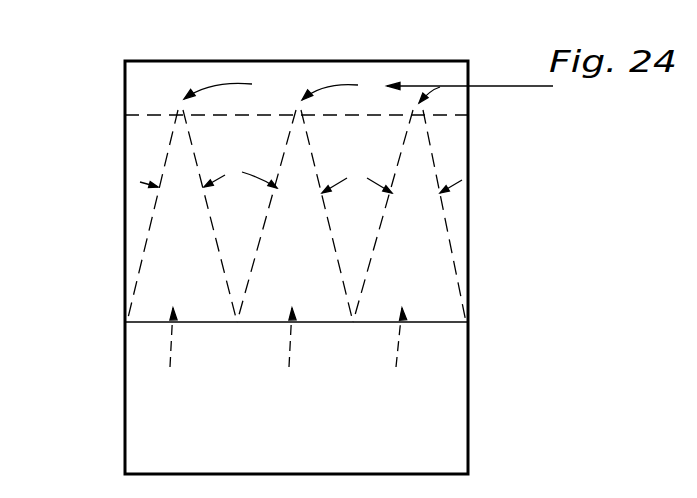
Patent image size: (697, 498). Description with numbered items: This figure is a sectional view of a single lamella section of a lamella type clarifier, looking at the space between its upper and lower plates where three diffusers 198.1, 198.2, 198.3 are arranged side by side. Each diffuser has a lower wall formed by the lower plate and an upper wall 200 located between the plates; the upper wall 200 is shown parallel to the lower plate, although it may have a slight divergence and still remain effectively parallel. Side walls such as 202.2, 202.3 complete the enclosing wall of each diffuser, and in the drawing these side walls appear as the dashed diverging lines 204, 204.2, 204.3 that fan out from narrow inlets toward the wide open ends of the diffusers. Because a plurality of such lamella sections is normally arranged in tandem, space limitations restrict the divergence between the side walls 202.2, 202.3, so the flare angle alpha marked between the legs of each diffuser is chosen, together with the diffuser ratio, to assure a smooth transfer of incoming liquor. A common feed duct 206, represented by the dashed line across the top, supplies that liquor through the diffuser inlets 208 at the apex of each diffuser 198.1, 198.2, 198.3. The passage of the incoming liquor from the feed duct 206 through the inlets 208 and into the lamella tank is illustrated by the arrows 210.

The upper wall 200 is at (453, 325).
The common feed duct 206 is at (137, 89).
The diffuser inlets 208 is at (298, 113).
The arrows 210 is at (526, 87).
The scan beam path 204 is at (372, 260).
The scan beam path 204.2 is at (255, 256).
The scan beam path 204.3 is at (144, 241).
The side wall 202.2 is at (397, 202).
The side wall 202.3 is at (212, 237).
The diffuser 198.1 is at (424, 340).
The diffuser 198.2 is at (318, 340).
The diffuser 198.3 is at (198, 340).